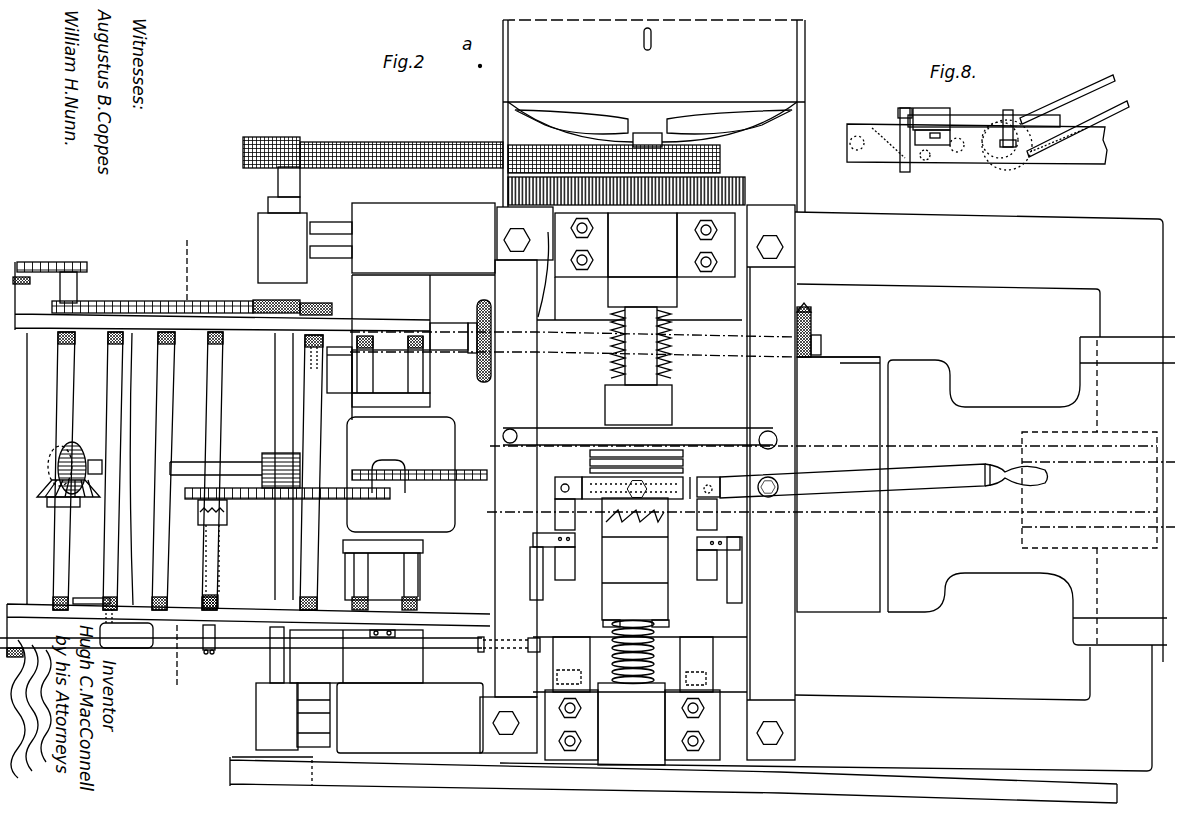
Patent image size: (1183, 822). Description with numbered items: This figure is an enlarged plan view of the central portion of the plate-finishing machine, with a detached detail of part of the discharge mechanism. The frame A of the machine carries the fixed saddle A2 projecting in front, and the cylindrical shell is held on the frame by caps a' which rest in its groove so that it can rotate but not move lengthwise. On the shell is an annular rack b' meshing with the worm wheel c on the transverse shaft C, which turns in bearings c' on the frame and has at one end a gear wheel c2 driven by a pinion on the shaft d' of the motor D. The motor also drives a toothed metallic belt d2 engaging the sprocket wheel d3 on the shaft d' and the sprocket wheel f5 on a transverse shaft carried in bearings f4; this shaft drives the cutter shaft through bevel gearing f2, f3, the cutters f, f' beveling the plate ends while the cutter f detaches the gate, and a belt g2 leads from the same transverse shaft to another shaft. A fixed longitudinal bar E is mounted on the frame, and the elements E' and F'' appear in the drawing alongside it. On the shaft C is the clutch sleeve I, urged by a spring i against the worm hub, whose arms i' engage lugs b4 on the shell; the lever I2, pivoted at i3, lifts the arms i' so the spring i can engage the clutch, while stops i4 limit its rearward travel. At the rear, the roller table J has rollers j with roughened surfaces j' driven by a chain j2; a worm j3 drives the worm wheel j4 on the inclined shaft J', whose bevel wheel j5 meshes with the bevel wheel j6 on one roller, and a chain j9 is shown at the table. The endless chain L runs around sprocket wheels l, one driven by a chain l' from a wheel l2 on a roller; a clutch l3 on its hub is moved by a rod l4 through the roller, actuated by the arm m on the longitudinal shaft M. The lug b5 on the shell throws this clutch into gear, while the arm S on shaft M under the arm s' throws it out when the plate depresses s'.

In FIG. 2A, the frame A is at (763, 487).
In FIG. 2A, the fixed saddle A2 is at (1062, 492).
In FIG. 2A, the motor D is at (654, 116).
In FIG. 2A, the motor shaft d' is at (647, 128).
In FIG. 2A, the belt d2 is at (401, 155).
In FIG. 2A, the sprocket wheel d3 is at (720, 152).
In FIG. 2A, the gear wheel c2 is at (745, 189).
In FIG. 2A, the bearings c' is at (637, 489).
In FIG. 2A, the worm wheel c is at (643, 462).
In FIG. 2A, the transverse shaft C is at (641, 351).
In FIG. 2A, the annular rack b' is at (632, 473).
In FIG. 2A, the lugs b4 is at (570, 475).
In FIG. 2A, the lug b5 is at (603, 624).
In FIG. 2A, the caps a' is at (628, 480).
In FIG. 2A, the clutch sleeve I is at (613, 547).
In FIG. 2A, the lever I2 is at (884, 479).
In FIG. 2A, the spring i is at (649, 649).
In FIG. 2A, the arms i' is at (532, 551).
In FIG. 2A, the pivot i3 is at (768, 499).
In FIG. 2A, the stops i4 is at (533, 570).
In FIG. 2A, the cutter f is at (814, 330).
In FIG. 2A, the cutter f' is at (478, 330).
In FIG. 2A, the bevel gearing f2 is at (305, 305).
In FIG. 2A, the bevel gearing f3 is at (270, 296).
In FIG. 2A, the bearings f4 is at (272, 462).
In FIG. 2A, the sprocket wheel f5 is at (289, 144).
In FIG. 2A, the fixed longitudinal bar E is at (453, 329).
In FIG. 2A, the shaft E' is at (271, 466).
In FIG. 2A, the shaft F'' is at (260, 655).
In FIG. 2A, the belt g2 is at (470, 760).
In FIG. 2A, the rollers j is at (238, 471).
In FIG. 2A, the roughened surfaces j' is at (211, 467).
In FIG. 2A, the chain j2 is at (95, 303).
In FIG. 2A, the worm j3 is at (268, 453).
In FIG. 2A, the worm wheel j4 is at (65, 462).
In FIG. 2A, the bevel wheel j5 is at (82, 448).
In FIG. 2A, the bevel wheel j6 is at (75, 502).
In FIG. 2A, the rack j9 is at (52, 271).
In FIG. 2A, the roller table J is at (235, 595).
In FIG. 2A, the inclined shaft J' is at (216, 458).
In FIG. 2A, the endless chain L is at (447, 470).
In FIG. 2A, the sprocket wheels l is at (419, 465).
In FIG. 8, the chain l' is at (1074, 113).
In FIG. 2A, the wheel l2 is at (202, 512).
In FIG. 8, the wheel l2 is at (1017, 168).
In FIG. 2A, the clutch l3 is at (227, 512).
In FIG. 2A, the rod l4 is at (220, 580).
In FIG. 8, the rod l4 is at (995, 165).
In FIG. 2A, the longitudinal shaft M is at (163, 640).
In FIG. 8, the longitudinal shaft M is at (975, 115).
In FIG. 2A, the arm m is at (528, 652).
In FIG. 8, the arm m is at (1011, 118).
In FIG. 8, the arm S is at (906, 128).
In FIG. 2A, the arm s' is at (91, 590).
In FIG. 8, the arm s' is at (900, 128).